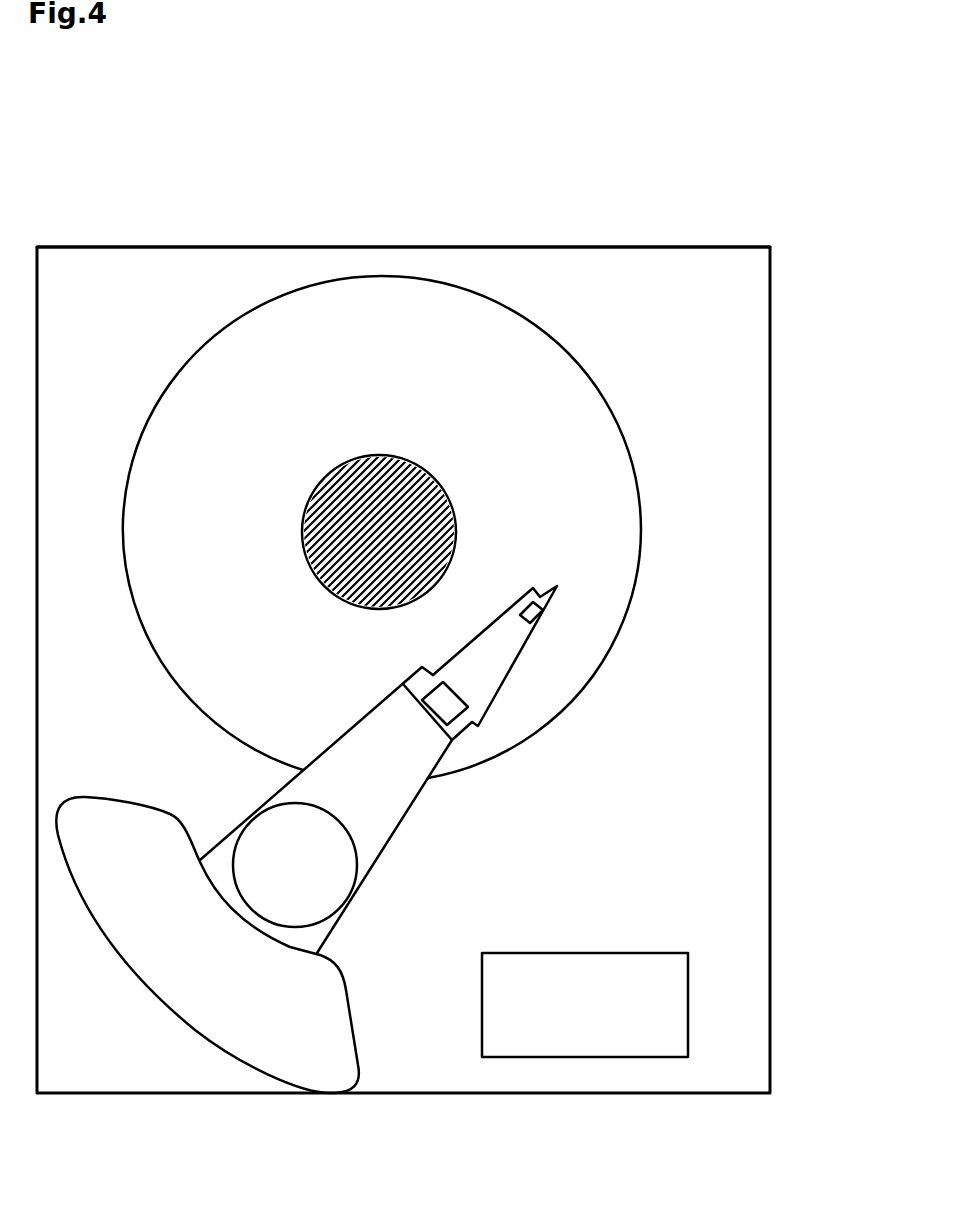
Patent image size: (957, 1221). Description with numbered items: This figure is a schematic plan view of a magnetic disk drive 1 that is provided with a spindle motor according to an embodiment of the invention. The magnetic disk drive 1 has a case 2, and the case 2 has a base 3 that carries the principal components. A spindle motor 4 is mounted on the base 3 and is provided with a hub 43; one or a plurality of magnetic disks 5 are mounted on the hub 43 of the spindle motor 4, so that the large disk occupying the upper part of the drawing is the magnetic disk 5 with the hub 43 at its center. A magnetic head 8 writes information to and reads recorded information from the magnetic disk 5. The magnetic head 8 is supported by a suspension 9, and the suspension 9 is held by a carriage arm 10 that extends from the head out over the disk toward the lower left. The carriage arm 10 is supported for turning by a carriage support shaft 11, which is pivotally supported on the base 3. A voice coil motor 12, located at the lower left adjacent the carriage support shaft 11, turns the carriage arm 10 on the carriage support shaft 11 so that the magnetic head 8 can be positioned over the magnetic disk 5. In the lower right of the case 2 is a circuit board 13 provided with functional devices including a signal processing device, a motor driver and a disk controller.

The magnetic disk drive 1 is at (148, 229).
The case 2 is at (593, 247).
The base 3 is at (760, 325).
The spindle motor 4 is at (456, 515).
The hub 43 is at (422, 470).
The magnetic disk 5 is at (230, 323).
The magnetic head 8 is at (542, 612).
The suspension 9 is at (503, 677).
The carriage arm 10 is at (382, 825).
The carriage support shaft 11 is at (342, 880).
The voice coil motor 12 is at (333, 988).
The circuit board 13 is at (612, 953).